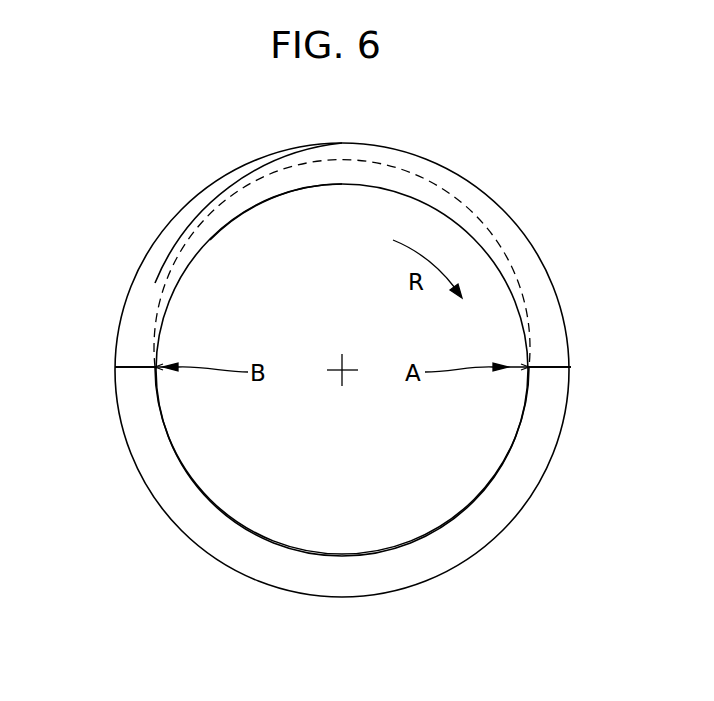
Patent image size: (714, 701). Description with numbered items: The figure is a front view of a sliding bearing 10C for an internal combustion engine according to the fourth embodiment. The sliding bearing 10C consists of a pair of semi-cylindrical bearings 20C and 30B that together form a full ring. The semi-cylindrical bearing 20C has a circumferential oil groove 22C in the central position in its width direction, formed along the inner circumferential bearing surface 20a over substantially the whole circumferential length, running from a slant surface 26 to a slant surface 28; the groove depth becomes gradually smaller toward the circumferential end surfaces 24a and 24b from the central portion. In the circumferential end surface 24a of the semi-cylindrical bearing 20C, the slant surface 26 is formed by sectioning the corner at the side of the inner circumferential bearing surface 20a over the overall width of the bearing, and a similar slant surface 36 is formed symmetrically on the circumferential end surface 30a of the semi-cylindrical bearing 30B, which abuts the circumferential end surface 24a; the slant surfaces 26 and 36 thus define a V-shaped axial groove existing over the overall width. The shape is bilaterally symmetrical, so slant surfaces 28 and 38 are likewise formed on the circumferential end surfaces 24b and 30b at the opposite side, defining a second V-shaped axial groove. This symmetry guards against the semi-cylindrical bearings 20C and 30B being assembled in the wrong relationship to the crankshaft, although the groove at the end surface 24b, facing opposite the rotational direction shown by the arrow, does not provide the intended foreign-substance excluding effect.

The sliding bearing 10C is at (525, 195).
The semi-cylindrical bearing 20C is at (158, 248).
The inner circumferential bearing surface 20a is at (268, 202).
The circumferential oil groove 22C is at (176, 262).
The circumferential end surface 30b is at (126, 365).
The circumferential end surface 30a is at (560, 364).
The circumferential end surface 24b is at (127, 371).
The circumferential end surface 24a is at (555, 371).
The slant surface 28 is at (165, 364).
The slant surface 38 is at (162, 369).
The slant surface 26 is at (520, 364).
The slant surface 36 is at (522, 370).
The semi-cylindrical bearing 30B is at (502, 513).